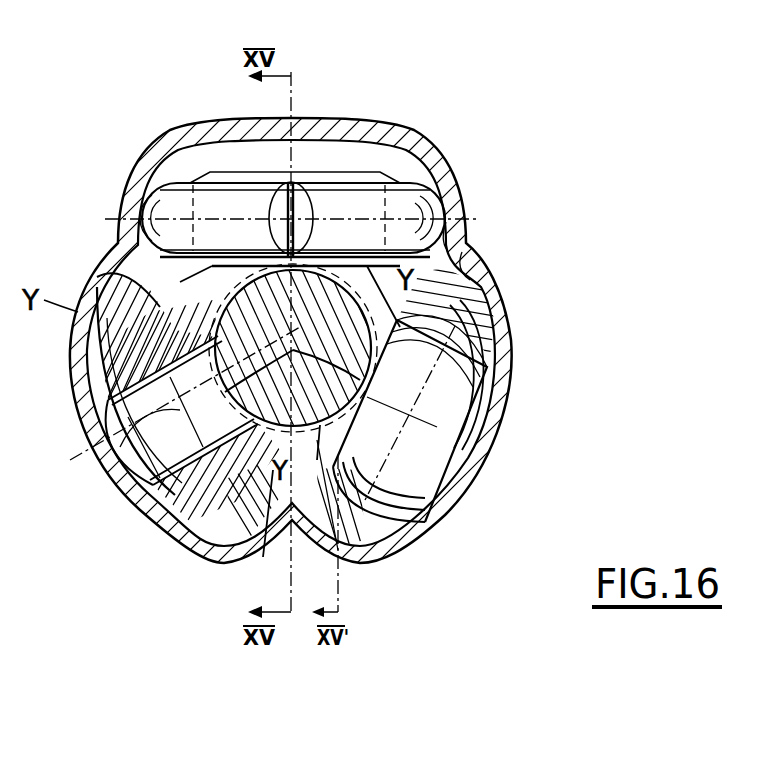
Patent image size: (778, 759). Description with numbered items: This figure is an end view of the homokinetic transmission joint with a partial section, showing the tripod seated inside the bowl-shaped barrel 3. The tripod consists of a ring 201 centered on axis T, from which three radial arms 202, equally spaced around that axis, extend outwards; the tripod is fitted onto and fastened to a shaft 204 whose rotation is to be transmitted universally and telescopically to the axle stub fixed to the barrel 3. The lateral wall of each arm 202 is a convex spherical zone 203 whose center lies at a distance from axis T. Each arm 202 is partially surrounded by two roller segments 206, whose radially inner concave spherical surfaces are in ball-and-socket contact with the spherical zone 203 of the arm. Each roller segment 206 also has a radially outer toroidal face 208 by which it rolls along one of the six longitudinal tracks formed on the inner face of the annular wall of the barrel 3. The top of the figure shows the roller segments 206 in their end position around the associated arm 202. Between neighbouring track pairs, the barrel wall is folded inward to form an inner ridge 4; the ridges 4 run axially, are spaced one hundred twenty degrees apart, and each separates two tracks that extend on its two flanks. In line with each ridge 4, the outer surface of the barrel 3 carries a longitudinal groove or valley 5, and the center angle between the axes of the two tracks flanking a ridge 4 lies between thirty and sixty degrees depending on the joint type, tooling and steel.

The barrel 3 is at (477, 485).
The inner ridge 4 is at (446, 222).
The longitudinal groove or valley 5 is at (462, 252).
The ring 201 is at (490, 380).
The radial arm 202 is at (310, 167).
The convex spherical zone 203 is at (470, 407).
The shaft 204 is at (140, 470).
The roller segment 206 is at (273, 212).
The radially outer toroidal face 208 is at (173, 220).